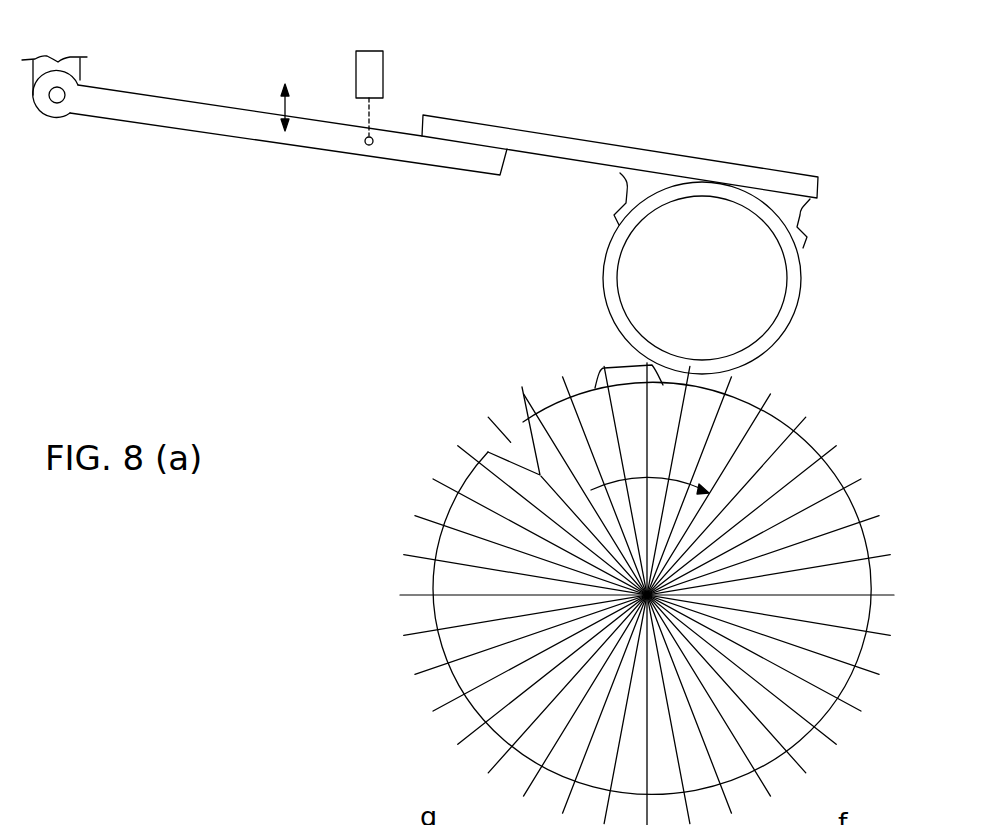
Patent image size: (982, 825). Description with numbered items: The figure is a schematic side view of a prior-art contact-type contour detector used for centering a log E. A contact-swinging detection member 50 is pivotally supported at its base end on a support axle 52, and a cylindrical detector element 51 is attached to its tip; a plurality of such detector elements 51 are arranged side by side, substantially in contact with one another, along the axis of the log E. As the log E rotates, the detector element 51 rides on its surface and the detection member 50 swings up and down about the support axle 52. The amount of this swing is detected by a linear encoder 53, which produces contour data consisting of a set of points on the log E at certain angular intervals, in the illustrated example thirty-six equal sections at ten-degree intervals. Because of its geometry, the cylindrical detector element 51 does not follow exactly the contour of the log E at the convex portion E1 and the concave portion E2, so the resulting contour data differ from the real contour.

The detection member 50 is at (558, 147).
The cylindrical detector element 51 is at (792, 295).
The support axle 52 is at (60, 98).
The linear encoder 53 is at (372, 80).
The log E is at (440, 612).
The convex portion E1 is at (627, 380).
The concave portion E2 is at (520, 455).